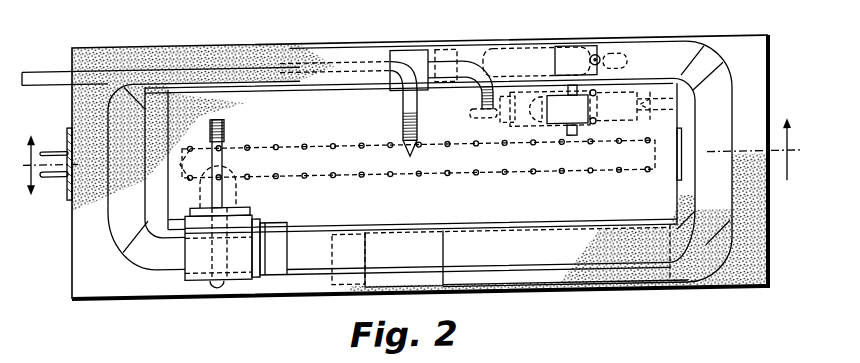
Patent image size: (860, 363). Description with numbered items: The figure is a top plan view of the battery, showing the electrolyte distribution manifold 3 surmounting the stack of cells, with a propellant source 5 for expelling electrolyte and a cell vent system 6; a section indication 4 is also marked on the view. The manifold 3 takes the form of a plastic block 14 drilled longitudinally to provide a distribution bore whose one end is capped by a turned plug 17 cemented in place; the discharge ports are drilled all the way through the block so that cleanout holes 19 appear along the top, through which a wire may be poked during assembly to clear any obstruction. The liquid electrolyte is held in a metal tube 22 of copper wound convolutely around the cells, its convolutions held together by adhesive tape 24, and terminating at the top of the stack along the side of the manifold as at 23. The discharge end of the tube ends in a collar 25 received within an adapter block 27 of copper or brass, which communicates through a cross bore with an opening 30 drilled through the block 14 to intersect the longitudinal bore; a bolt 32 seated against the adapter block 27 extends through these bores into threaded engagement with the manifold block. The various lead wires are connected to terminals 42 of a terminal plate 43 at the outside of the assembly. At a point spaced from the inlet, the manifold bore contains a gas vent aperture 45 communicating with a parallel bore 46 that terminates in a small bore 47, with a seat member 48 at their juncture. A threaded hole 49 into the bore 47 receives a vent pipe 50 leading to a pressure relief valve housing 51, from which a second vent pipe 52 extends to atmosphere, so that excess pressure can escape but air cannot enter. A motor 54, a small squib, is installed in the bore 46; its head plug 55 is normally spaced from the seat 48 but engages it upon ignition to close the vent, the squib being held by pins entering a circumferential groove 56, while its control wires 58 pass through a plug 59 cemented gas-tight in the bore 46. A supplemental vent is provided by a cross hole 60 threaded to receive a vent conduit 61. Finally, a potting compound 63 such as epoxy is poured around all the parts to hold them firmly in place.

The manifold 3 is at (524, 179).
The section line 4 is at (413, 166).
The propellant source 5 is at (532, 284).
The cell vent system 6 is at (630, 89).
The block 14 is at (440, 176).
The turned plug 17 is at (685, 171).
The cleanout holes 19 is at (398, 178).
The metal tube 22 is at (723, 130).
The tube termination 23 is at (318, 272).
The adhesive tape 24 is at (136, 247).
The collar 25 is at (280, 219).
The adapter block 27 is at (190, 277).
The opening 30 is at (240, 189).
The bolt 32 is at (217, 284).
The terminals 42 is at (60, 171).
The terminal plate 43 is at (66, 124).
The gas vent aperture 45 is at (585, 133).
The bore 46 is at (660, 85).
The small bore 47 is at (476, 117).
The seat member 48 is at (507, 98).
The hole 49 is at (482, 100).
The vent pipe 50 is at (467, 62).
The pressure relief valve housing 51 is at (407, 50).
The vent pipe 52 is at (44, 70).
The motor 54 is at (557, 128).
The plug 55 is at (520, 128).
The circumferential groove 56 is at (605, 112).
The control wires 58 is at (683, 114).
The plug 59 is at (660, 130).
The cross hole 60 is at (403, 122).
The vent conduit 61 is at (403, 98).
The potting compound 63 is at (745, 275).